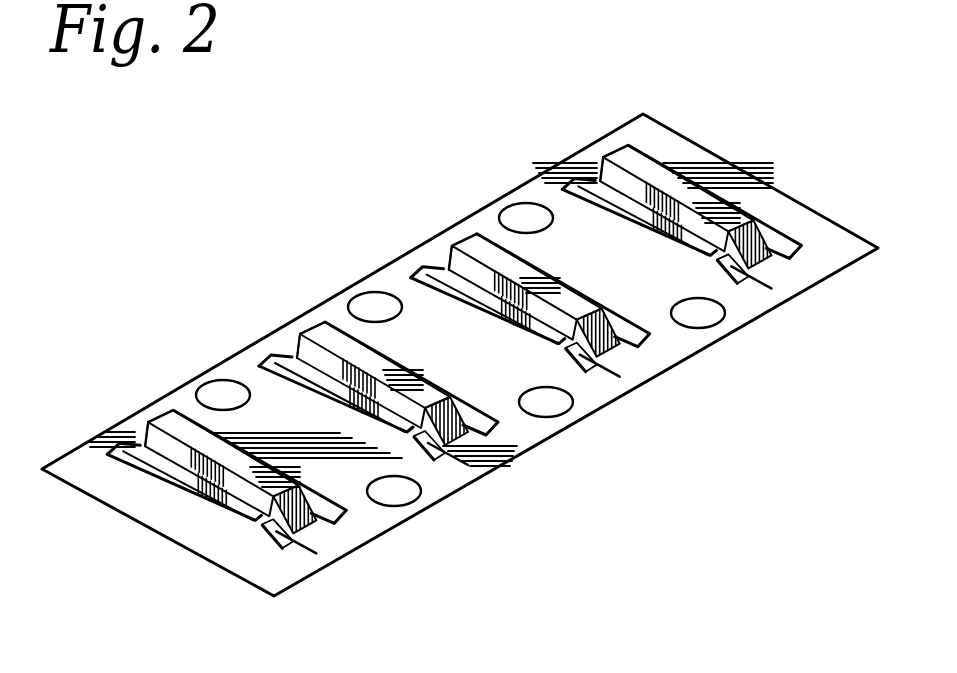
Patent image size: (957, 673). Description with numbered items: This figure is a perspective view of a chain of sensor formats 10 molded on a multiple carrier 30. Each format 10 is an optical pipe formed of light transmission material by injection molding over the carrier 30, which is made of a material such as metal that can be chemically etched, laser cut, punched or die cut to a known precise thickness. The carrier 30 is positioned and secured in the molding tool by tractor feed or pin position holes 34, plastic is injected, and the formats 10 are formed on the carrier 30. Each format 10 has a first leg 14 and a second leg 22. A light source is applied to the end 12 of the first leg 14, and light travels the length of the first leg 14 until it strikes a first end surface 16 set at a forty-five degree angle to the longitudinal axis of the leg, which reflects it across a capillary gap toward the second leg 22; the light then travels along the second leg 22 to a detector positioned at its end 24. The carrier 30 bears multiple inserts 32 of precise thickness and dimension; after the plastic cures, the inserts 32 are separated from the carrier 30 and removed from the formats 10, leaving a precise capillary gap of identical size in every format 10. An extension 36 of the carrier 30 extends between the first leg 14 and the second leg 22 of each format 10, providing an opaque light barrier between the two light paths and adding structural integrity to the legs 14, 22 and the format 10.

The sensor format 10 is at (111, 367).
The end of first leg 12 is at (160, 422).
The first leg 14 is at (183, 433).
The first end surface 16 is at (316, 522).
The second leg 22 is at (320, 397).
The end of second leg 24 is at (208, 382).
The multiple carrier 30 is at (235, 580).
The multiple inserts 32 is at (288, 548).
The tractor feed or pin position holes 34 is at (217, 386).
The extension 36 is at (190, 487).